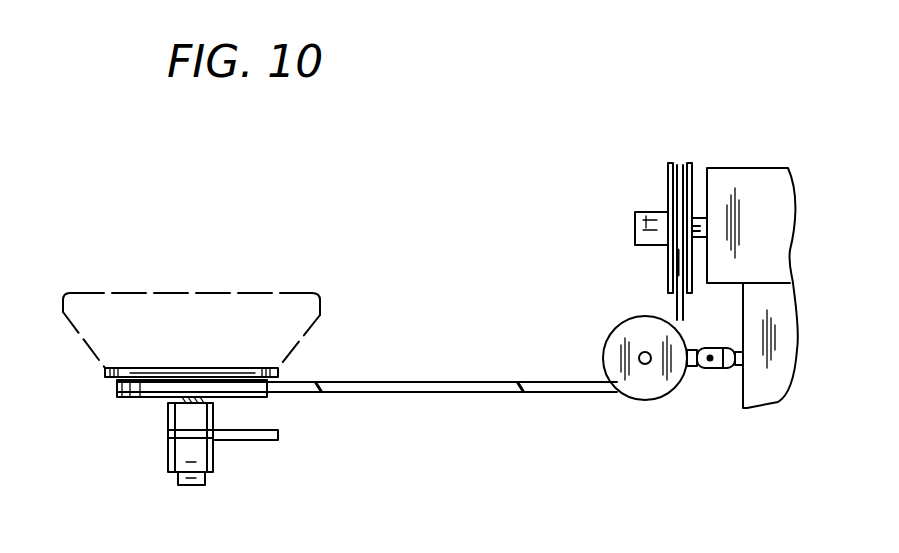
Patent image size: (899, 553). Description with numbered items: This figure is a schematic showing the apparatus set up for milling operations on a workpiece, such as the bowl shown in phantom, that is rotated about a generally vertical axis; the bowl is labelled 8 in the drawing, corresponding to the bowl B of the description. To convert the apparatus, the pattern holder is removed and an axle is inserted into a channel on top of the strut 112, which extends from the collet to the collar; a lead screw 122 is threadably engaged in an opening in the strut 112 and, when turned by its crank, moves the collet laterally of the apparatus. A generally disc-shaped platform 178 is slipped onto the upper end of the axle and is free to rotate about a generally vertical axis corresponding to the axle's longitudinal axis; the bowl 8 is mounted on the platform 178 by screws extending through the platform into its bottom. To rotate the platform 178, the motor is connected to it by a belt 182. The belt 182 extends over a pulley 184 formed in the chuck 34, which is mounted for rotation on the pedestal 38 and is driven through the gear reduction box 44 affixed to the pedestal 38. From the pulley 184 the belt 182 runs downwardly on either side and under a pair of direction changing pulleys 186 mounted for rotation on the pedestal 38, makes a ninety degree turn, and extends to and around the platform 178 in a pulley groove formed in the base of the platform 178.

The bowl / hopper 8 is at (188, 290).
The platform 178 is at (105, 372).
The belt 182 is at (430, 388).
The strut 112 is at (168, 418).
The lead screw 122 is at (268, 440).
The chuck 34 is at (643, 212).
The pulley 184 is at (692, 168).
The gear reduction box 44 is at (767, 182).
The pedestal 38 is at (775, 392).
The direction changing pulleys 186 is at (657, 385).